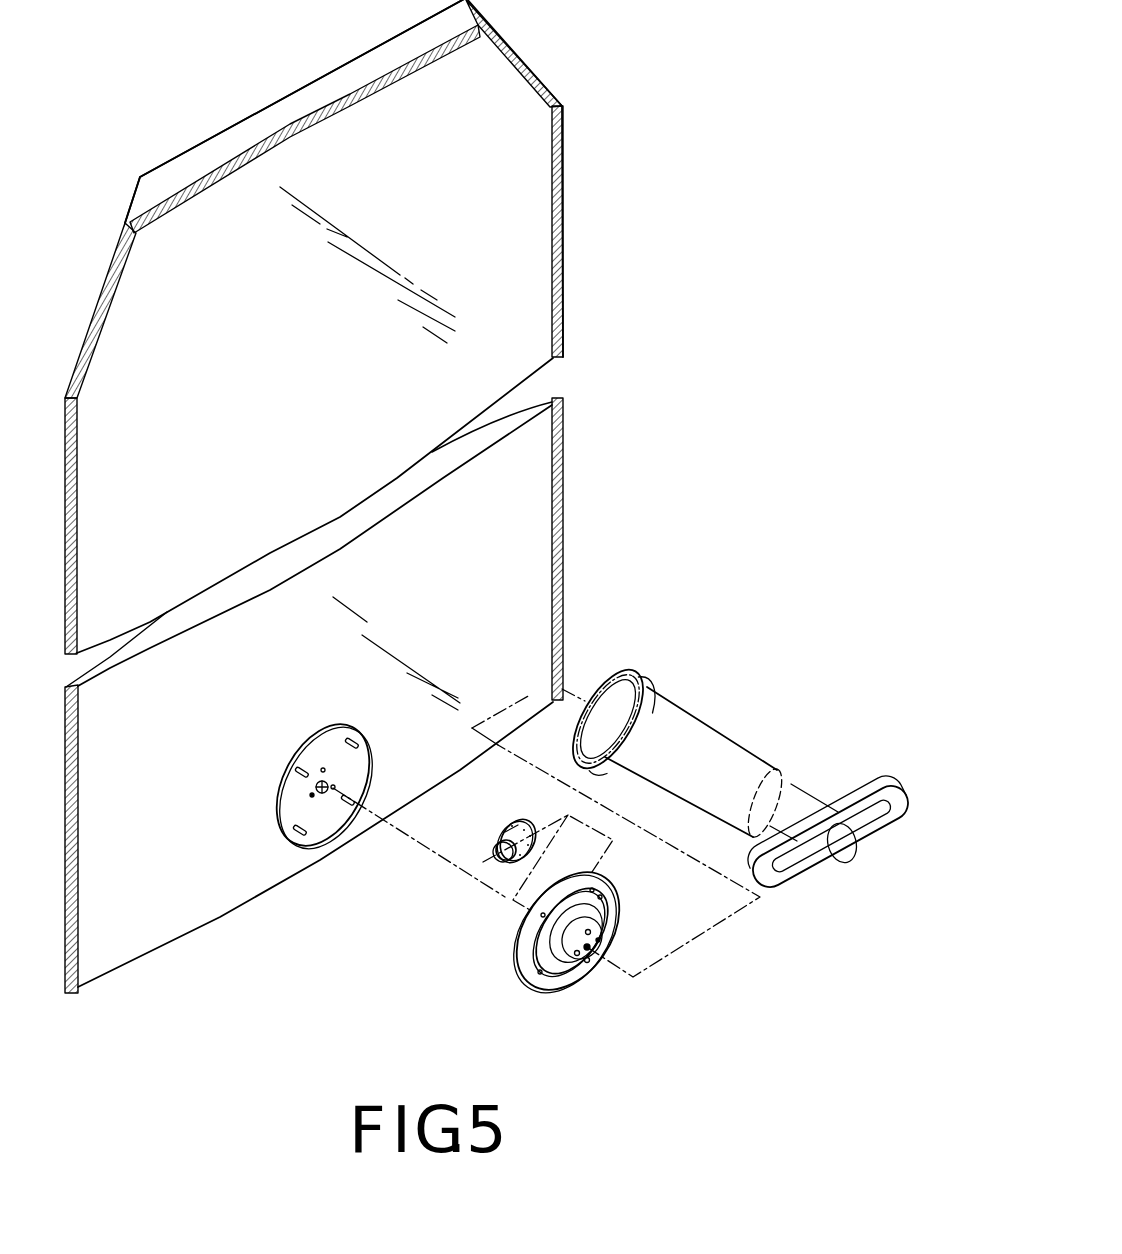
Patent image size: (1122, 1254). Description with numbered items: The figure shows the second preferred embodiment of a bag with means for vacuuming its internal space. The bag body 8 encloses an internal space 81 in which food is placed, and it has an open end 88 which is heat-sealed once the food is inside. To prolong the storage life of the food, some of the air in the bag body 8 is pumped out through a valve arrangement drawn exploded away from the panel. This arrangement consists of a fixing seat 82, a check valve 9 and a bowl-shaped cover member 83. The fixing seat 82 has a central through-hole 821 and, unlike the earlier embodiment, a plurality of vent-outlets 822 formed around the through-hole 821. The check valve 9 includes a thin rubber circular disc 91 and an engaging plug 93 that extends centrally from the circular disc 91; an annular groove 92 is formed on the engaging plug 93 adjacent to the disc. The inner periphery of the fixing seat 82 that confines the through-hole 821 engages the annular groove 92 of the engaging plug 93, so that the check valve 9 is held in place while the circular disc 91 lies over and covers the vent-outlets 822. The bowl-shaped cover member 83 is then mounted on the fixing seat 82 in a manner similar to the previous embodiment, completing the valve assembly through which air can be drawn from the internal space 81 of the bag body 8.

The bag body 8 is at (535, 556).
The open end 88 is at (270, 112).
The internal space 81 is at (377, 510).
The fixing seat 82 is at (327, 773).
The through-hole 821 is at (326, 790).
The vent-outlets 822 is at (311, 796).
The bowl-shaped cover member 83 is at (605, 888).
The check valve 9 is at (520, 859).
The circular disc 91 is at (513, 822).
The annular groove 92 is at (532, 835).
The engaging plug 93 is at (508, 862).